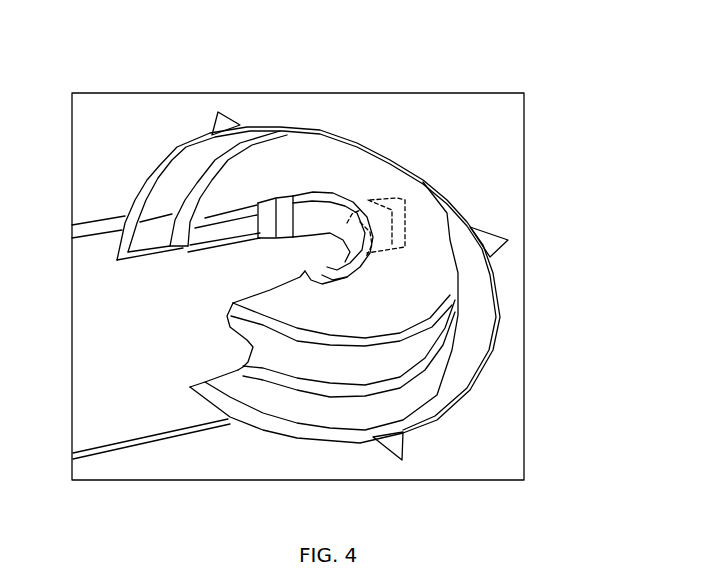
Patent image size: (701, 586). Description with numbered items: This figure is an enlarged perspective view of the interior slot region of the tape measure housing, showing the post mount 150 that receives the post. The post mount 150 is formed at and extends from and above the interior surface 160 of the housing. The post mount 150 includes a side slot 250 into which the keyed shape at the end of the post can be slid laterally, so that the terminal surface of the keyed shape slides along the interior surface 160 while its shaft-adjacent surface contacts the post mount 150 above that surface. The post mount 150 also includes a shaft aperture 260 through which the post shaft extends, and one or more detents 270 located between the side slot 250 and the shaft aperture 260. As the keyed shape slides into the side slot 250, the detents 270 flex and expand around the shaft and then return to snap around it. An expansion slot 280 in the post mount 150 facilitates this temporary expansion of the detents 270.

The interior surface 160 is at (450, 107).
The post mount 150 is at (257, 165).
The detents 270 is at (280, 223).
The side slot 250 is at (280, 262).
The expansion slot 280 is at (398, 200).
The shaft aperture 260 is at (337, 225).